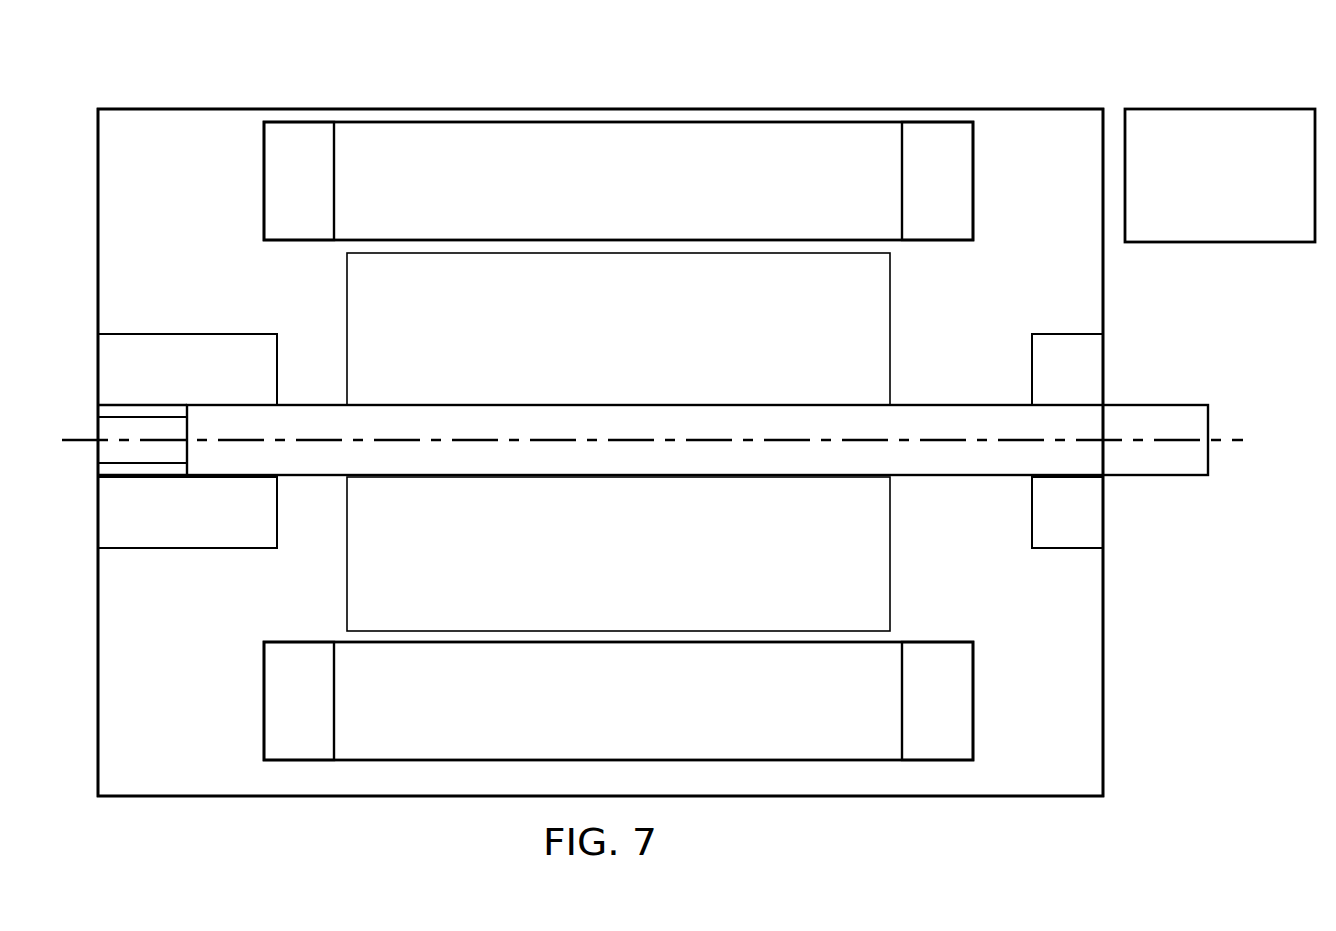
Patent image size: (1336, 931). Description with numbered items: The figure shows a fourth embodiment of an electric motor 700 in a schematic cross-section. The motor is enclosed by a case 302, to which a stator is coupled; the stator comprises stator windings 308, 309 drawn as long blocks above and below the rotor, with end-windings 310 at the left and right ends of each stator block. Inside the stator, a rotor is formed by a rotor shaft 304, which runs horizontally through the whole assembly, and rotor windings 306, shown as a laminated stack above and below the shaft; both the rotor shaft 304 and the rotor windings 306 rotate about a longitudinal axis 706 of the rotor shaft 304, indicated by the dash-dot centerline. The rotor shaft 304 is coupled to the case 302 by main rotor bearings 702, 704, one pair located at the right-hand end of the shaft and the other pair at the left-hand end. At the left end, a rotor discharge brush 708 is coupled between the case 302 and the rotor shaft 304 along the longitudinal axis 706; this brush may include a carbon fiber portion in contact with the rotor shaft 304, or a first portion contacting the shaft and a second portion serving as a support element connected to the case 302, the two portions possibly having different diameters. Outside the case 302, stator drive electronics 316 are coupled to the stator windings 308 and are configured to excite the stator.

The electric motor 700 is at (270, 97).
The case 302 is at (1110, 639).
The rotor shaft 304 is at (951, 405).
The rotor windings 306 is at (640, 376).
The stator windings 308 is at (640, 736).
The stator 309 is at (640, 215).
The end-windings 310 is at (320, 197).
The stator drive electronics 316 is at (1198, 224).
The main rotor bearing 702 is at (1045, 384).
The main rotor bearing 704 is at (209, 384).
The longitudinal axis 706 is at (466, 438).
The rotor discharge brush 708 is at (107, 428).